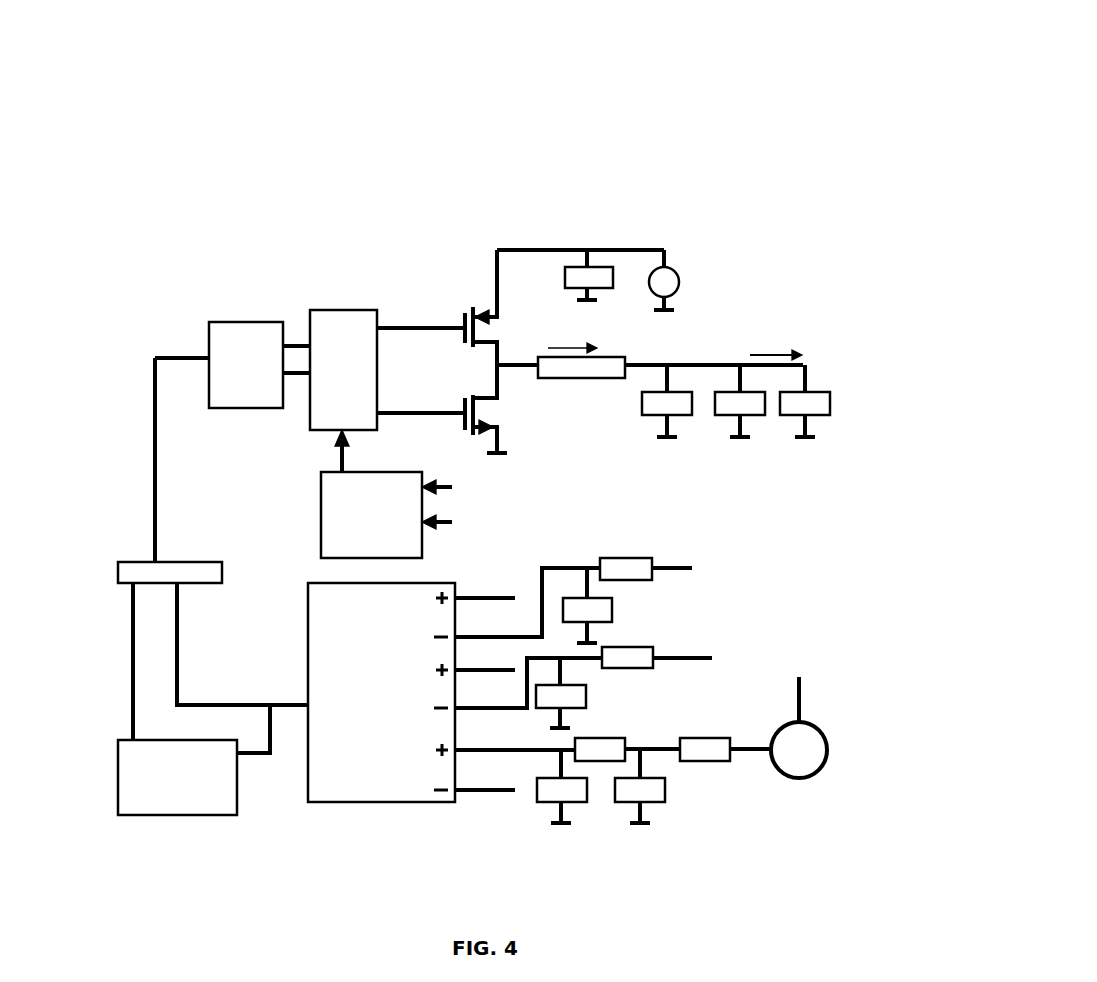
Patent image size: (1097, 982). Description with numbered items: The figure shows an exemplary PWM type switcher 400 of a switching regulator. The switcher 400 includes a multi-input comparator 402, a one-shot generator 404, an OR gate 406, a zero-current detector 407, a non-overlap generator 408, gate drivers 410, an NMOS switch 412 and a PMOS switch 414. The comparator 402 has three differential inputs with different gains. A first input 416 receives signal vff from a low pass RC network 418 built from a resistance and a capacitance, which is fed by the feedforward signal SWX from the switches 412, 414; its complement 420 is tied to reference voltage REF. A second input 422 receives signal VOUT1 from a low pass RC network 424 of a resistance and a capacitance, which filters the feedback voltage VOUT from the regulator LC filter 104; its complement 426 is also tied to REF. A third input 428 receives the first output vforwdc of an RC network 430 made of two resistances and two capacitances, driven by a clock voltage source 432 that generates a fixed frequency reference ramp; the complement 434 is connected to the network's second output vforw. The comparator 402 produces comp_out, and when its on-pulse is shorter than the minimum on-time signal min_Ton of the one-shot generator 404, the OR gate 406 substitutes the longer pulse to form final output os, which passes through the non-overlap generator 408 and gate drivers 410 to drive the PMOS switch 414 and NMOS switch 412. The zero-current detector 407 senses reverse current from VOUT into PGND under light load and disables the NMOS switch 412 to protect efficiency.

The PWM type switcher 400 is at (653, 113).
The filter 104 is at (848, 425).
The multi-input comparator 402 is at (360, 802).
The one-shot generator 404 is at (152, 815).
The OR gate 406 is at (118, 570).
The zero-current detector 407 is at (422, 540).
The non-overlap generator 408 is at (218, 321).
The gate drivers 410 is at (330, 310).
The NMOS switch 412 is at (472, 396).
The PMOS switch 414 is at (472, 346).
The first input 416 is at (433, 638).
The low pass RC network 418 is at (705, 560).
The complement of first input 420 is at (437, 597).
The second input 422 is at (433, 708).
The low pass RC network 424 is at (712, 650).
The complement of second input 426 is at (435, 670).
The third input 428 is at (430, 748).
The RC network 430 is at (738, 832).
The clock voltage source 432 is at (827, 760).
The complement of third input 434 is at (433, 790).